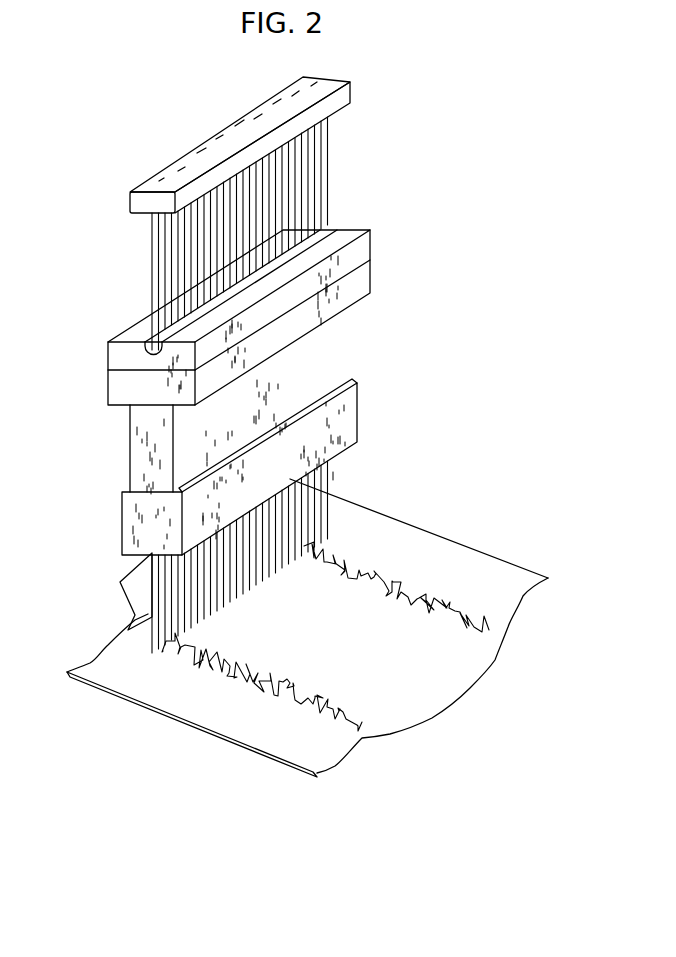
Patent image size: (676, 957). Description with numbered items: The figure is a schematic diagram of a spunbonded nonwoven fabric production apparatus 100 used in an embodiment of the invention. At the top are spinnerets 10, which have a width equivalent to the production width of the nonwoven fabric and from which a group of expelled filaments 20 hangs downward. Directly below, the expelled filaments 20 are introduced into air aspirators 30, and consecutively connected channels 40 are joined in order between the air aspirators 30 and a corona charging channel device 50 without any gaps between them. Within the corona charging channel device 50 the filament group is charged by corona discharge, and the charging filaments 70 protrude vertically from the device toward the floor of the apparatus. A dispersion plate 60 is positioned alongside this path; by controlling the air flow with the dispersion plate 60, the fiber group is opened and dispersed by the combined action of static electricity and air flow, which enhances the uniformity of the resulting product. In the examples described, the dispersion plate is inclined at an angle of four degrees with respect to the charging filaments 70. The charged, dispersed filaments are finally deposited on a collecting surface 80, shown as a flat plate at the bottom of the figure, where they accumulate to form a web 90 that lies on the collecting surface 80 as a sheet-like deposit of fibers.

The spunbonded nonwoven fabric production apparatus 100 is at (143, 127).
The spinneret 10 is at (311, 87).
The expelled filaments 20 is at (330, 172).
The air aspirators 30 is at (125, 387).
The consecutively connected channels 40 is at (142, 423).
The corona charging channel device 50 is at (348, 422).
The dispersion plate 60 is at (130, 613).
The charging filaments 70 is at (328, 520).
The collecting surface 80 is at (207, 708).
The web 90 is at (483, 613).